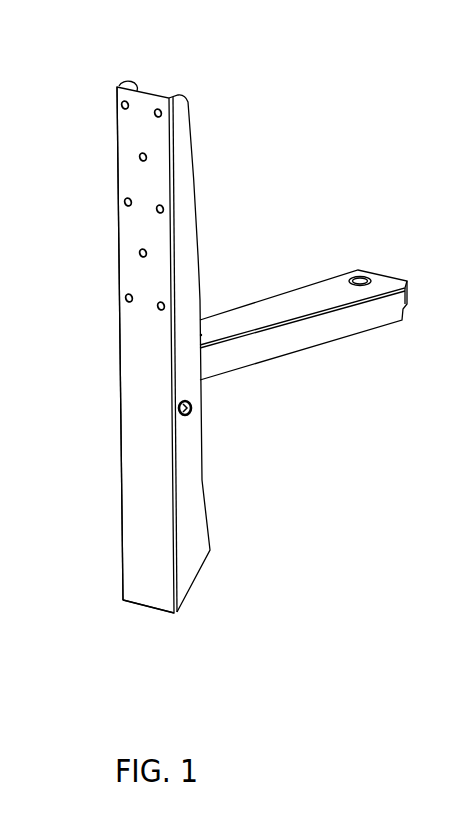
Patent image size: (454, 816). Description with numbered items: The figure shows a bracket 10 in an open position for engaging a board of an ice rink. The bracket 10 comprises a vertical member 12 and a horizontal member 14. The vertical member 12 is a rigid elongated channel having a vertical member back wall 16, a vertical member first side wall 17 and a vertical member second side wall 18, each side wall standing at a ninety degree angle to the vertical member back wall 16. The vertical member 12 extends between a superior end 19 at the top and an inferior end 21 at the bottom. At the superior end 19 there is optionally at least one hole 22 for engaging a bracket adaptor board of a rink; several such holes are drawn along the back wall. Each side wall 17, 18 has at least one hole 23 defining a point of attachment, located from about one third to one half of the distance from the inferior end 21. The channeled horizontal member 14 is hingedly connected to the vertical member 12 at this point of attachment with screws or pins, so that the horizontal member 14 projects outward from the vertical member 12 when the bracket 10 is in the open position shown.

The bracket 10 is at (280, 118).
The vertical member 12 is at (107, 427).
The horizontal member 14 is at (318, 278).
The vertical member back wall 16 is at (152, 430).
The vertical member first side wall 17 is at (177, 93).
The vertical member second side wall 18 is at (122, 83).
The superior end 19 is at (117, 113).
The inferior end 21 is at (157, 610).
The hole 22 is at (146, 250).
The hole 23 is at (193, 409).